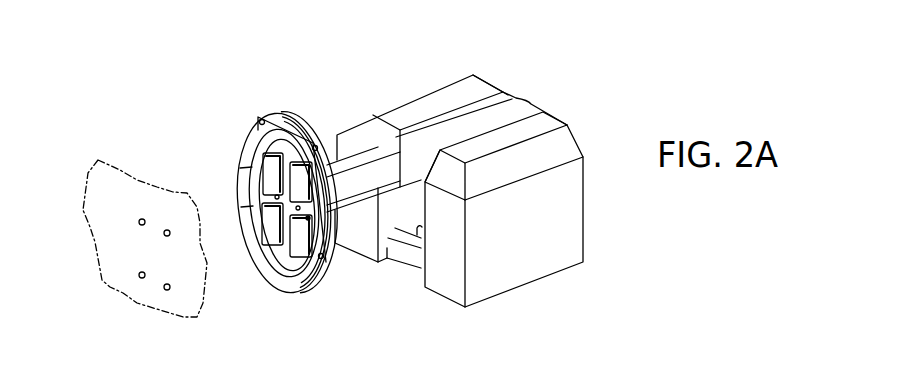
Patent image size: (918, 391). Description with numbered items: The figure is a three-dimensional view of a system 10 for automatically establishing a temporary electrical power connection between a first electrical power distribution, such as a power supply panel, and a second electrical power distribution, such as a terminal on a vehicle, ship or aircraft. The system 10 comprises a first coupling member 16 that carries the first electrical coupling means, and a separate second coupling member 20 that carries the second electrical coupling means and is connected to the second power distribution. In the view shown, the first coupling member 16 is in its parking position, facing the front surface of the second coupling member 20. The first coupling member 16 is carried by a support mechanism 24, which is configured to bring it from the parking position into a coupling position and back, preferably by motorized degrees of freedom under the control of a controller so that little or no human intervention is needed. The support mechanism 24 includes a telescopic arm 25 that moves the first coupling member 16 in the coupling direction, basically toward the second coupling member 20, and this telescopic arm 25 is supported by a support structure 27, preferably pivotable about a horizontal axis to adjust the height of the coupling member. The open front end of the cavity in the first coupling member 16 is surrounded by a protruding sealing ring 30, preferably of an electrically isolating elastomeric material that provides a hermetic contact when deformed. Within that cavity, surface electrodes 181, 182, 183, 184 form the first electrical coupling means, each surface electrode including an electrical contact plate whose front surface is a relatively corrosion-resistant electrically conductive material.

The system 10 is at (155, 70).
The first coupling member 16 is at (231, 165).
The surface electrode 181 is at (271, 165).
The surface electrode 182 is at (297, 173).
The third window 183 is at (300, 243).
The fourth window 184 is at (273, 223).
The second coupling member 20 is at (134, 260).
The support mechanism 24 is at (434, 99).
The telescopic arm 25 is at (374, 147).
The support structure 27 is at (552, 243).
The sealing ring 30 is at (318, 257).